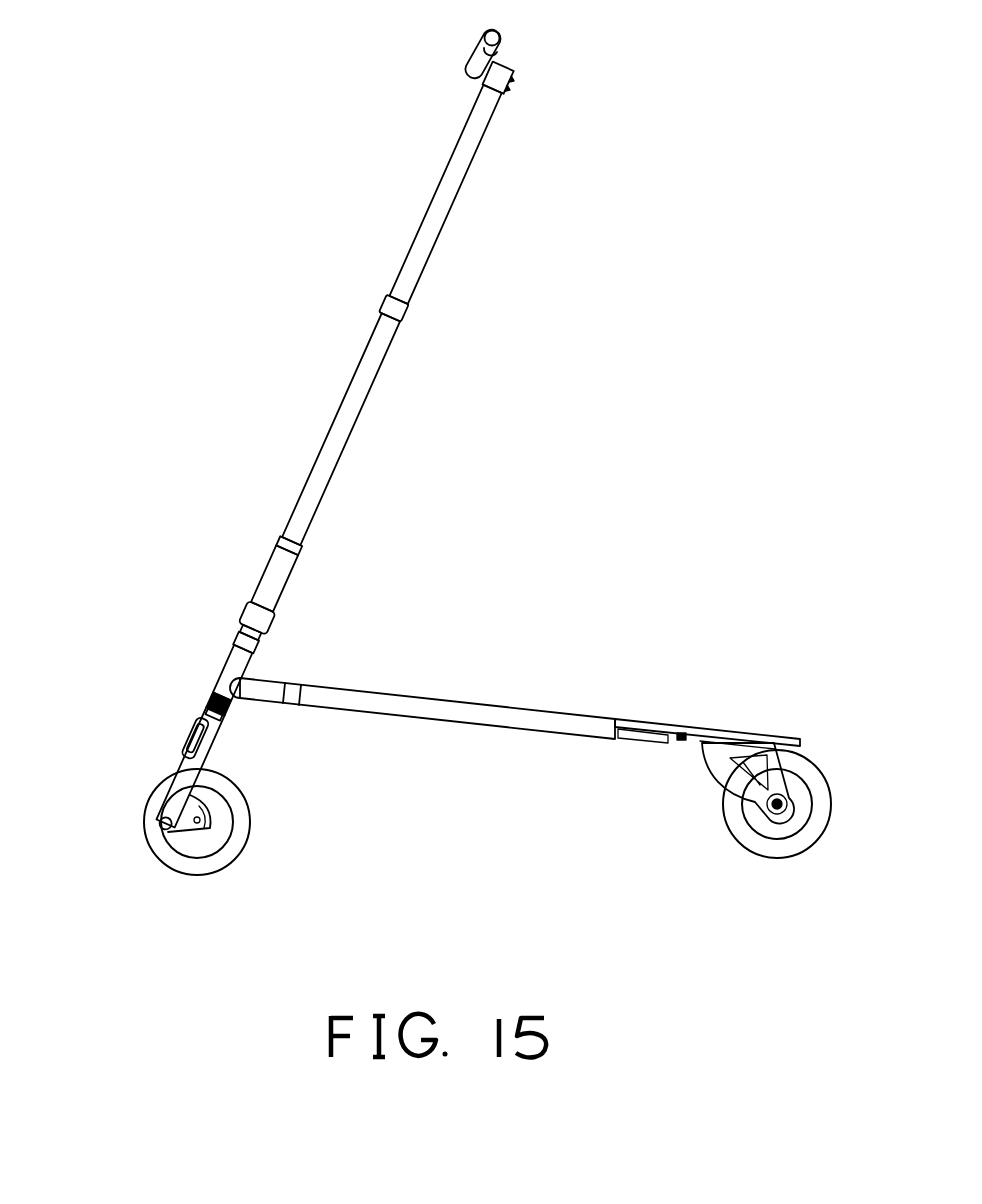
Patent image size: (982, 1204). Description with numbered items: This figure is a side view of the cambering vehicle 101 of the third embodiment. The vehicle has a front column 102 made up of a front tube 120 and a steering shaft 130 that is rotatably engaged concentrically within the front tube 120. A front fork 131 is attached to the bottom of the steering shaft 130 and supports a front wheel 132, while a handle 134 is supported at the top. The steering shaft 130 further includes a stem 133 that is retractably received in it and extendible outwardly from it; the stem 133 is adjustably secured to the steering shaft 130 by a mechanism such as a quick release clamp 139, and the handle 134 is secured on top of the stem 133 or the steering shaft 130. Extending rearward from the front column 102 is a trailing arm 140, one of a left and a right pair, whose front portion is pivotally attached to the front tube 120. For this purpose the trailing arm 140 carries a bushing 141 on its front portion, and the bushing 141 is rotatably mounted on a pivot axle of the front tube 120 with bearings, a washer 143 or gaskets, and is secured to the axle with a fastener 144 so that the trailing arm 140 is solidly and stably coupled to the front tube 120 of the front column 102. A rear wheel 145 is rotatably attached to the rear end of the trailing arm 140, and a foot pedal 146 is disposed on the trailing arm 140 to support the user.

The cambering vehicle 101 is at (238, 313).
The front column 102 is at (230, 535).
The handle 134 is at (499, 62).
The stem 133 is at (448, 200).
The quick release clamp 139 is at (400, 306).
The steering shaft 130 is at (352, 430).
The front tube 120 is at (247, 628).
The washer 143 is at (213, 695).
The bushing 141 is at (227, 680).
The front fork 131 is at (200, 723).
The fastener 144 is at (222, 718).
The front wheel 132 is at (228, 848).
The trailing arm 140 is at (540, 722).
The foot pedal 146 is at (793, 737).
The rear wheel 145 is at (805, 840).